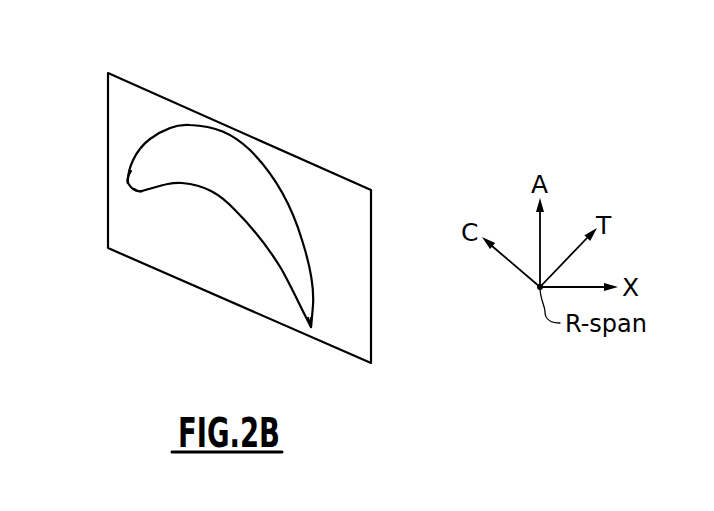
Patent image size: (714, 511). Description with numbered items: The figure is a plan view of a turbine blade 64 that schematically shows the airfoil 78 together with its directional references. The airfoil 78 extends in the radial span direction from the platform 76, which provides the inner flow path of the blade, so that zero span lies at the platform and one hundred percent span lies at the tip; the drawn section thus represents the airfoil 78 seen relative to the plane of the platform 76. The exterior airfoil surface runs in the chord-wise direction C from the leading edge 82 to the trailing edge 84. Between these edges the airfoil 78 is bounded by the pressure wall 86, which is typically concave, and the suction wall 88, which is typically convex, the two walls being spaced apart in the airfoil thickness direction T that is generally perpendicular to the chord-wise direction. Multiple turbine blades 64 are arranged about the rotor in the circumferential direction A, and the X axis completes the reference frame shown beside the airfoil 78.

The turbine blade 64 is at (342, 112).
The platform 76 is at (170, 84).
The airfoil 78 is at (132, 200).
The leading edge 82 is at (128, 183).
The trailing edge 84 is at (311, 327).
The pressure wall 86 is at (227, 202).
The suction wall 88 is at (242, 140).